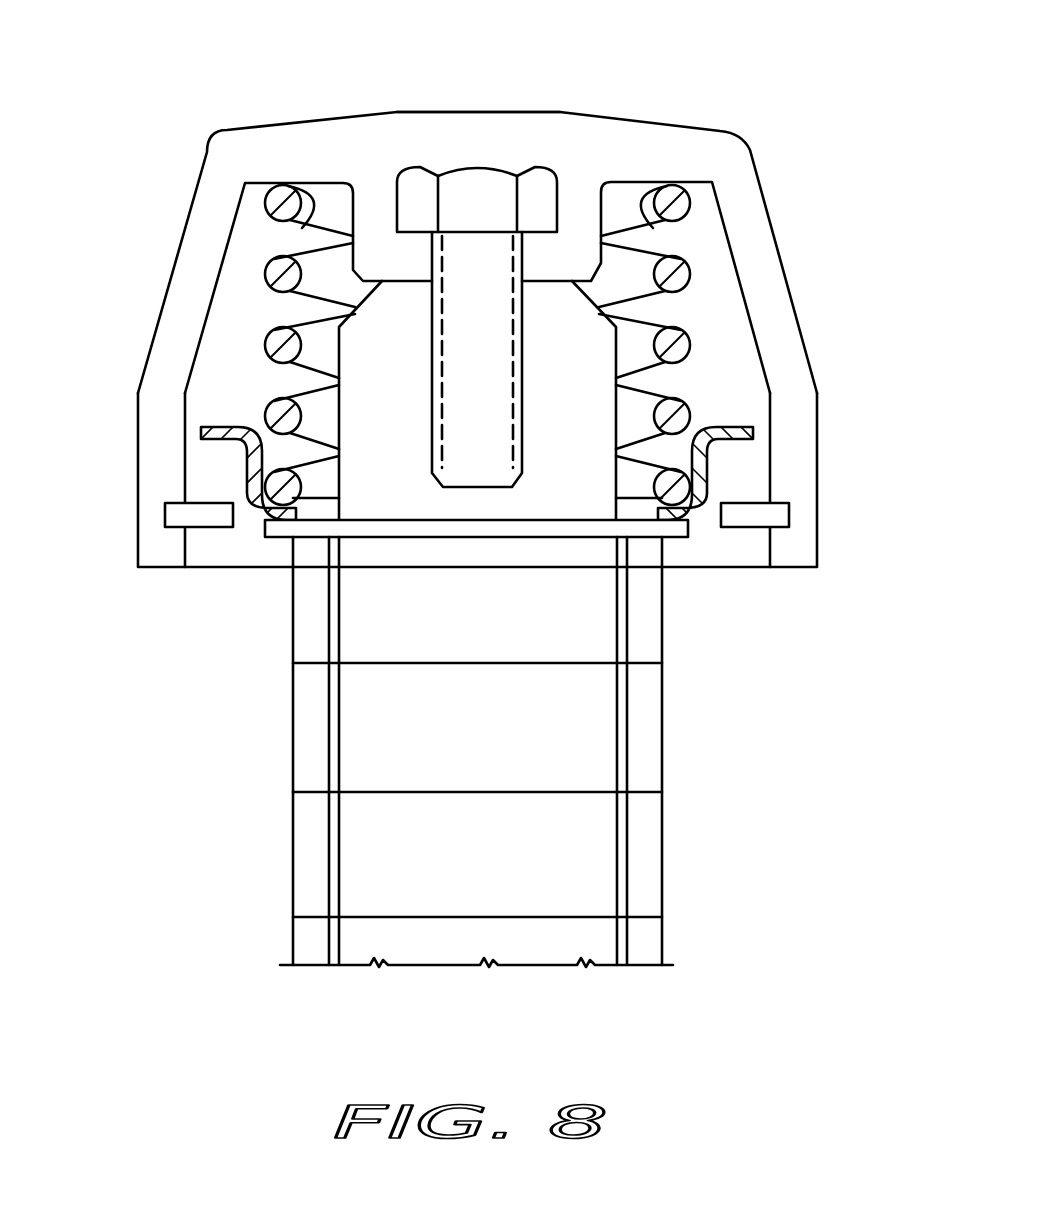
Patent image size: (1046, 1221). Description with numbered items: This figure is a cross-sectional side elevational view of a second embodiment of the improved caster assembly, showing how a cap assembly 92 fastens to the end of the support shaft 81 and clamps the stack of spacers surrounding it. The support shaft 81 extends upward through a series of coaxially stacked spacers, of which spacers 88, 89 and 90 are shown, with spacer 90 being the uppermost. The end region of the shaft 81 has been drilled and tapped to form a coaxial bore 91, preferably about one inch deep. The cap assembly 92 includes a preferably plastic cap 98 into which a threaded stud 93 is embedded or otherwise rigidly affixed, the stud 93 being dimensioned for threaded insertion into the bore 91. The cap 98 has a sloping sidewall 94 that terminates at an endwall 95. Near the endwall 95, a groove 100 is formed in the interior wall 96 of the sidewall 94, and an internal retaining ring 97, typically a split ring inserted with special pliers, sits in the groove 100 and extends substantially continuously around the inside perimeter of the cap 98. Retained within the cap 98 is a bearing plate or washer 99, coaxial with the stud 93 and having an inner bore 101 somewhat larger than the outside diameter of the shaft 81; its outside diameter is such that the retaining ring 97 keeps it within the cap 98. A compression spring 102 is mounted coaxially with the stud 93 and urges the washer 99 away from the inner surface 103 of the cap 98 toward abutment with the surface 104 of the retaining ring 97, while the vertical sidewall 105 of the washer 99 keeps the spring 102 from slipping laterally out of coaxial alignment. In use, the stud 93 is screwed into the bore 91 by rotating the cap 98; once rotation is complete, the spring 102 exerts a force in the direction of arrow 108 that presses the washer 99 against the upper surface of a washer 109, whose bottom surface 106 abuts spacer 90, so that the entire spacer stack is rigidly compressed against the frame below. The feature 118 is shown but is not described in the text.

The support shaft 81 is at (570, 377).
The spacer 88 is at (645, 872).
The spacer 89 is at (645, 737).
The spacer 90 is at (643, 623).
The coaxial bore 91 is at (437, 477).
The cap assembly 92 is at (795, 118).
The threaded stud 93 is at (538, 190).
The sloping sidewall 94 is at (783, 308).
The endwall 95 is at (153, 568).
The interior wall 96 is at (185, 413).
The internal retaining ring 97 is at (212, 512).
The cap 98 is at (485, 130).
The bearing plate or washer 99 is at (712, 470).
The groove 100 is at (168, 507).
The inner bore 101 is at (308, 510).
The compression spring 102 is at (687, 197).
The inner surface 103 is at (294, 224).
The surface 104 is at (198, 502).
The vertical sidewall 105 is at (252, 462).
The bottom surface 106 is at (402, 538).
The arrow 108 is at (248, 322).
The washer 109 is at (280, 530).
The plate surface 118 is at (545, 520).